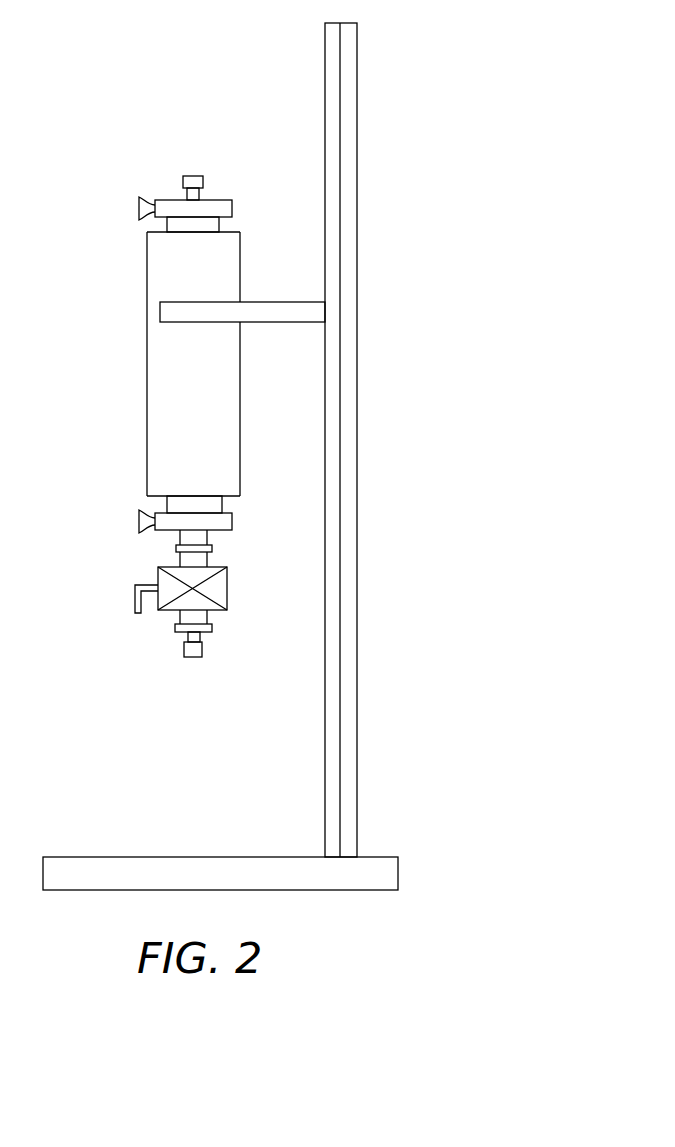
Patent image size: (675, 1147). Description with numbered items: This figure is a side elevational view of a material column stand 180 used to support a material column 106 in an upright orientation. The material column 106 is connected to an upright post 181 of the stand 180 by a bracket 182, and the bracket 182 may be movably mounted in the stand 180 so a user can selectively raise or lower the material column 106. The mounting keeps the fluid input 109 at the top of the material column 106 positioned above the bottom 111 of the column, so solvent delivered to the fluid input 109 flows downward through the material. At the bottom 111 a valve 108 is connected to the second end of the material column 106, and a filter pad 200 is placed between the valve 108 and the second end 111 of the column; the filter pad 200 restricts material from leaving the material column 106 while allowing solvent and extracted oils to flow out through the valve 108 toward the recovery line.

The material column 106 is at (147, 366).
The valve 108 is at (228, 589).
The fluid input 109 is at (199, 195).
The bottom (second end) of the material column 111 is at (222, 504).
The material column stand 180 is at (400, 254).
The upright post 181 is at (357, 107).
The bracket 182 is at (278, 302).
The filter pad 200 is at (176, 550).